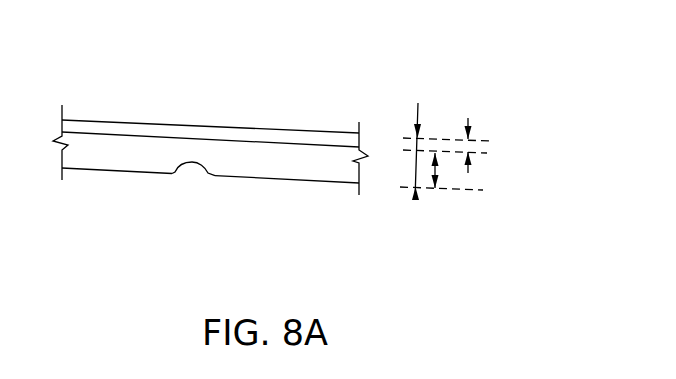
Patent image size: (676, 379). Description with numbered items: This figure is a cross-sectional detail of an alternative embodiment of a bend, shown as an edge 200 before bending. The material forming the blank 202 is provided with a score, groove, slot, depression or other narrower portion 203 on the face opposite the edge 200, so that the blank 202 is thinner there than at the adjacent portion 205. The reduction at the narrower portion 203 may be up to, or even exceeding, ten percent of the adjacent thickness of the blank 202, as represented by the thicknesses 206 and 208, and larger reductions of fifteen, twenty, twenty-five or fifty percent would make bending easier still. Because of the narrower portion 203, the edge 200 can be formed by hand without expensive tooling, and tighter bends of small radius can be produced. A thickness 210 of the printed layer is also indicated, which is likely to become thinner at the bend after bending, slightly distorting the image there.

The edge 200 is at (125, 119).
The blank 202 is at (302, 135).
The narrower portion 203 is at (183, 164).
The adjacent portion 205 is at (238, 180).
The thickness 206 is at (418, 158).
The thickness 208 is at (437, 168).
The thickness of the printed layer 210 is at (472, 147).